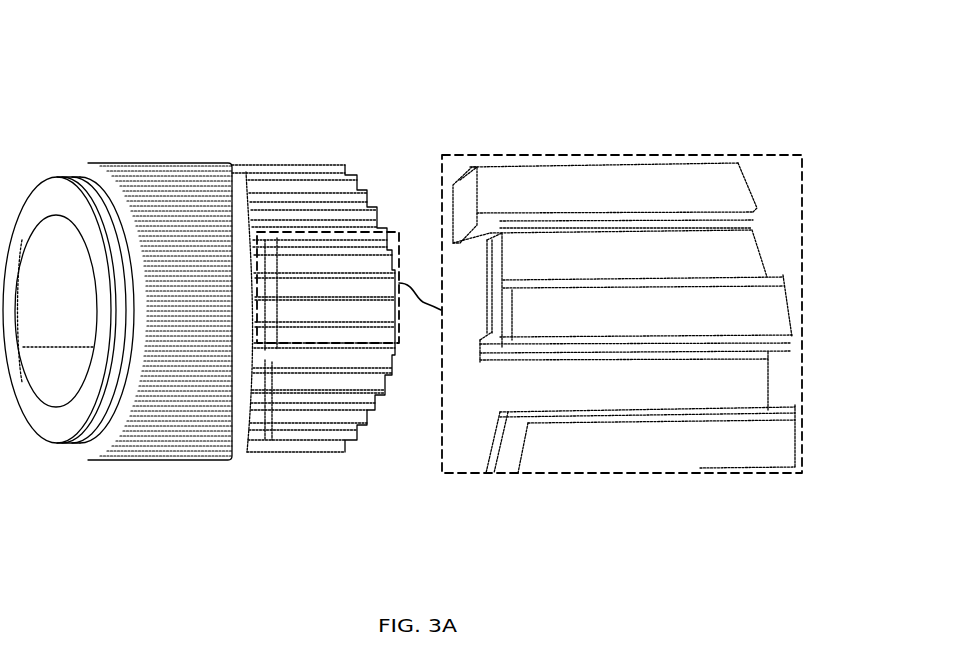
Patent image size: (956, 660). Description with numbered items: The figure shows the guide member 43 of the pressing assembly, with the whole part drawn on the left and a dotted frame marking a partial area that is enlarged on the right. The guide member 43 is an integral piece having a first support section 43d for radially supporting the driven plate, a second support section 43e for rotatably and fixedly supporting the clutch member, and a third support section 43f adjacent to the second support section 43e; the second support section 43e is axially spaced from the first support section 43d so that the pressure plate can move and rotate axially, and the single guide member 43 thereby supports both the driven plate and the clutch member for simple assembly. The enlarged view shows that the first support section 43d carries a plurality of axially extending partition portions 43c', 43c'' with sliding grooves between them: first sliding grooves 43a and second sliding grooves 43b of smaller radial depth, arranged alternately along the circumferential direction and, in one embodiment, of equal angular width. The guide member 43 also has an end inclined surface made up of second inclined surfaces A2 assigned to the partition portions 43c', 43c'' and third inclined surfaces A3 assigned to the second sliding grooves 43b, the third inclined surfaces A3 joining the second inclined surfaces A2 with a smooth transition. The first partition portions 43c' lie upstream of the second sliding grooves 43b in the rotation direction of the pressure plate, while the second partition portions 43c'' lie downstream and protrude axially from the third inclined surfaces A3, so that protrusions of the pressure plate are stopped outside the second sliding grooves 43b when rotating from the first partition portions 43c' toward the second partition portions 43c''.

The guide member 43 is at (182, 93).
The first sliding grooves 43a is at (760, 371).
The second sliding grooves 43b is at (748, 240).
The first partition portions 43c' is at (679, 317).
The second partition portions 43c'' is at (665, 318).
The first support section 43d is at (253, 133).
The second support section 43e is at (143, 170).
The third support section 43f is at (85, 170).
The second inclined surfaces A2 is at (468, 203).
The third inclined surfaces A3 is at (502, 266).